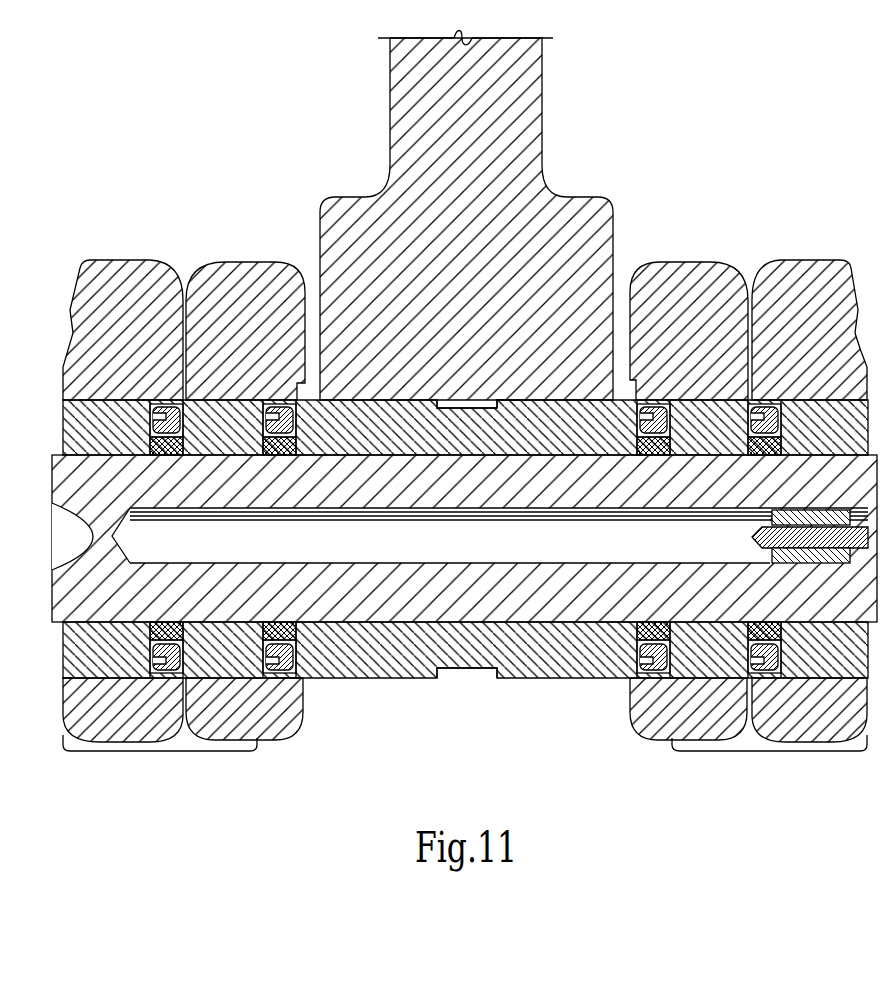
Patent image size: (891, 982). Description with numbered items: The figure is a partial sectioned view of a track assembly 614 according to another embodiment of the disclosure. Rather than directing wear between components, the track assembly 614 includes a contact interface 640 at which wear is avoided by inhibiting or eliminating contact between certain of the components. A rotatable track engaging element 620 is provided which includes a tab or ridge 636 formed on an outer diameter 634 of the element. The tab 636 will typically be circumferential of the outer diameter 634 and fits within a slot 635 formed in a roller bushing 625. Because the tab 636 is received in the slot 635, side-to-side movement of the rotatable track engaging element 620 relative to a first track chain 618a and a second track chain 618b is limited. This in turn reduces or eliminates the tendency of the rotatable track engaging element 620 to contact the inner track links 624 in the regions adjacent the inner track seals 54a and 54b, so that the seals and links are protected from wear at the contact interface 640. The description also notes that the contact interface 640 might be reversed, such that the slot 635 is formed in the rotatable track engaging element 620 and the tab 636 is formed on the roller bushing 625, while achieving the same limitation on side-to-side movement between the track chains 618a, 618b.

The track assembly 614 is at (230, 181).
The first track chain 618a is at (184, 256).
The second track chain 618b is at (754, 256).
The rotatable track engaging element 620 is at (512, 122).
The inner track links 624 is at (258, 264).
The roller bushing 625 is at (322, 678).
The outer diameter 634 is at (355, 402).
The slot 635 is at (470, 668).
The tab 636 is at (437, 406).
The contact interface 640 is at (510, 411).
The inner track seal 54a is at (277, 413).
The inner track seal 54b is at (652, 413).